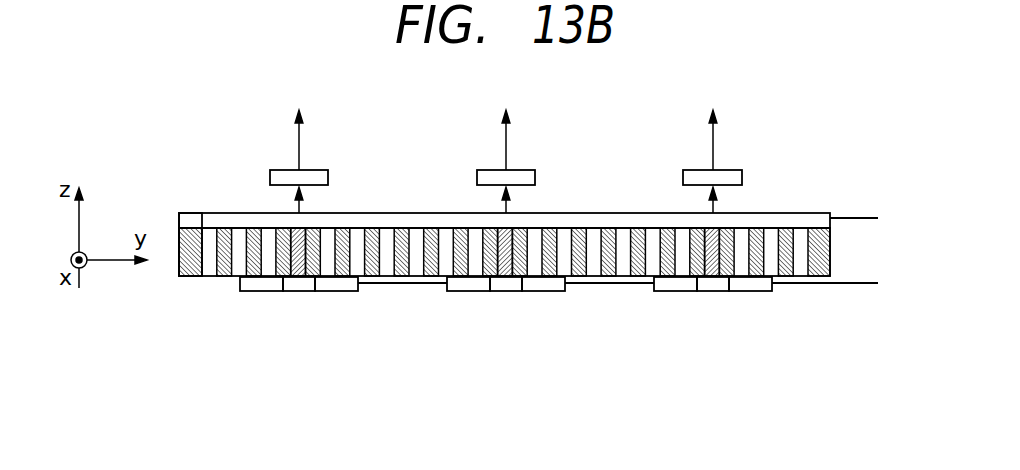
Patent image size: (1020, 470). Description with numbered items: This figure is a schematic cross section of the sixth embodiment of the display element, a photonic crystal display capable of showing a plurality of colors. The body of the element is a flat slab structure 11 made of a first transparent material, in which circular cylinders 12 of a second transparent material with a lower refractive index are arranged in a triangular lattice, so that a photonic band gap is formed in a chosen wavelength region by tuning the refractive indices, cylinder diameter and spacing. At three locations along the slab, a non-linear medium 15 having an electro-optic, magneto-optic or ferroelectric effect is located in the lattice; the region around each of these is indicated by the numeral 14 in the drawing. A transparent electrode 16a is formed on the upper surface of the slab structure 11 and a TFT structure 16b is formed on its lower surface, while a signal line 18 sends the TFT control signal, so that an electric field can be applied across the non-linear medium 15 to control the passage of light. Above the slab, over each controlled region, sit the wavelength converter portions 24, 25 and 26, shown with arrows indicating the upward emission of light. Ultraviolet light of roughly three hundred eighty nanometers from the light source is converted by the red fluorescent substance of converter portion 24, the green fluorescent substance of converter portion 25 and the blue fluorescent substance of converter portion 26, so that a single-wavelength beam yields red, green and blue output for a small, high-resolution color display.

The slab structure 11 is at (190, 232).
The circular cylinders 12 is at (212, 268).
The driven piezoelectric element region 14 is at (277, 226).
The non-linear medium 15 is at (297, 268).
The transparent electrode 16a is at (818, 212).
The TFT structure 16b is at (272, 285).
The signal line 18 is at (845, 285).
The converter portion 24 is at (318, 178).
The converter portion 25 is at (524, 178).
The converter portion 26 is at (731, 178).